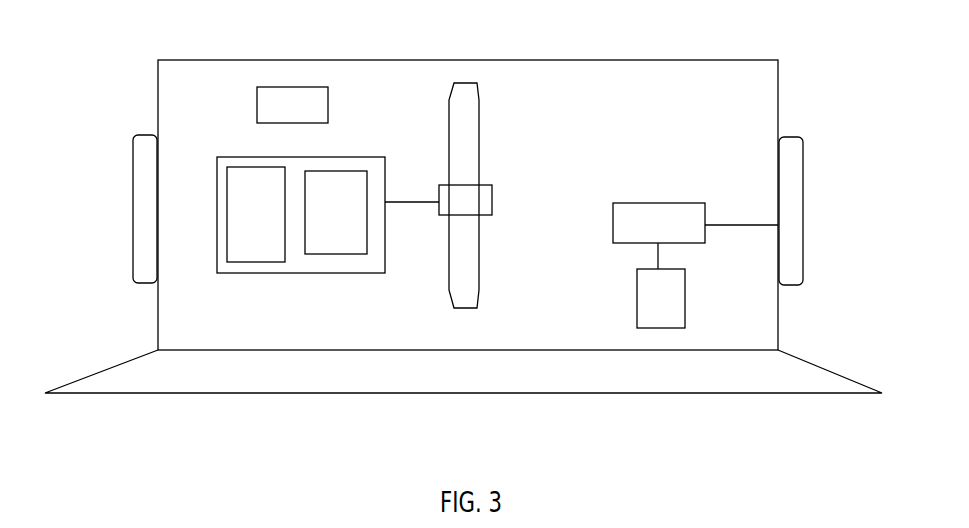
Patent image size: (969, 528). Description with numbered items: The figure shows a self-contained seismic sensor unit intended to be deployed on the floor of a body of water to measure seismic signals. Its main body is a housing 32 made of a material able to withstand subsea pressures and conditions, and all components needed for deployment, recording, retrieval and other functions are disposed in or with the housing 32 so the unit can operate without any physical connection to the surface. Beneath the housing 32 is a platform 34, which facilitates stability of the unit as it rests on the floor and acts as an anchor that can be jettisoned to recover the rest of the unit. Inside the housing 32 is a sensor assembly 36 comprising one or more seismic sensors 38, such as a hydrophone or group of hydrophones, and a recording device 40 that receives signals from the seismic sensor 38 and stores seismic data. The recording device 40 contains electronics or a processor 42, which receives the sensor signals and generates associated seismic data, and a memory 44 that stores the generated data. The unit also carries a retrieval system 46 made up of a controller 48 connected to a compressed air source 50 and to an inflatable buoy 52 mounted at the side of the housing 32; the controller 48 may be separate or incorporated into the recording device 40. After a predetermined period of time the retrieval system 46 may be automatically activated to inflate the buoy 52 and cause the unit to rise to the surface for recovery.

The housing 32 is at (205, 60).
The platform 34 is at (310, 378).
The sensor assembly 36 is at (455, 157).
The seismic sensor 38 is at (468, 143).
The recording device 40 is at (287, 230).
The processor 42 is at (347, 240).
The memory 44 is at (242, 195).
The retrieval system 46 is at (689, 216).
The controller 48 is at (638, 212).
The compressed air source 50 is at (675, 307).
The inflatable buoy 52 is at (792, 195).